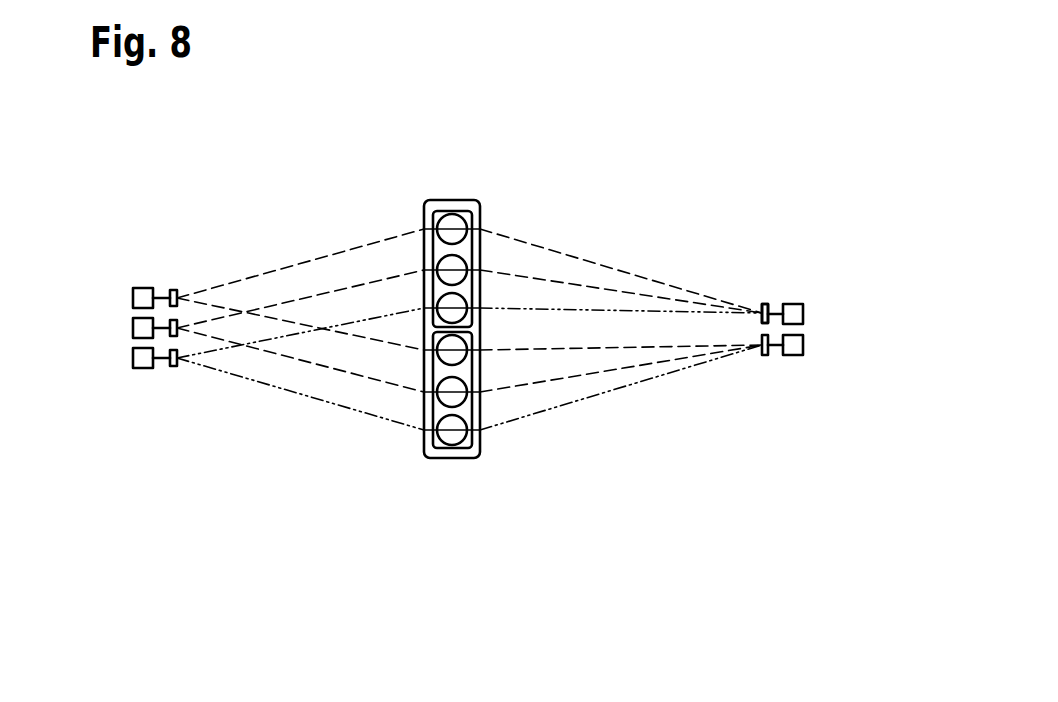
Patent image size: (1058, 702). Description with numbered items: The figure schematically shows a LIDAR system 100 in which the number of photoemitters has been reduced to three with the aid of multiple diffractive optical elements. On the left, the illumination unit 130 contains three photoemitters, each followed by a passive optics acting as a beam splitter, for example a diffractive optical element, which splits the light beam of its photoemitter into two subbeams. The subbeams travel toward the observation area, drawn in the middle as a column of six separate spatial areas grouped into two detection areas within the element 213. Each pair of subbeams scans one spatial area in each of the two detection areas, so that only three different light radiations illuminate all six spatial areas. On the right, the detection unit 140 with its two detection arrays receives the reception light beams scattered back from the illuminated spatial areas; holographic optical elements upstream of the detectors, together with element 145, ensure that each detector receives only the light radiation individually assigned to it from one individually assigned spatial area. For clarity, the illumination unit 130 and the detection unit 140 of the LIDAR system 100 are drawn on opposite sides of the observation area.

The LIDAR system 100 is at (676, 549).
The illumination unit 130 is at (104, 224).
The detection unit 140 is at (838, 112).
The receiver aperture element 145 is at (765, 297).
The lens array 213 is at (520, 348).